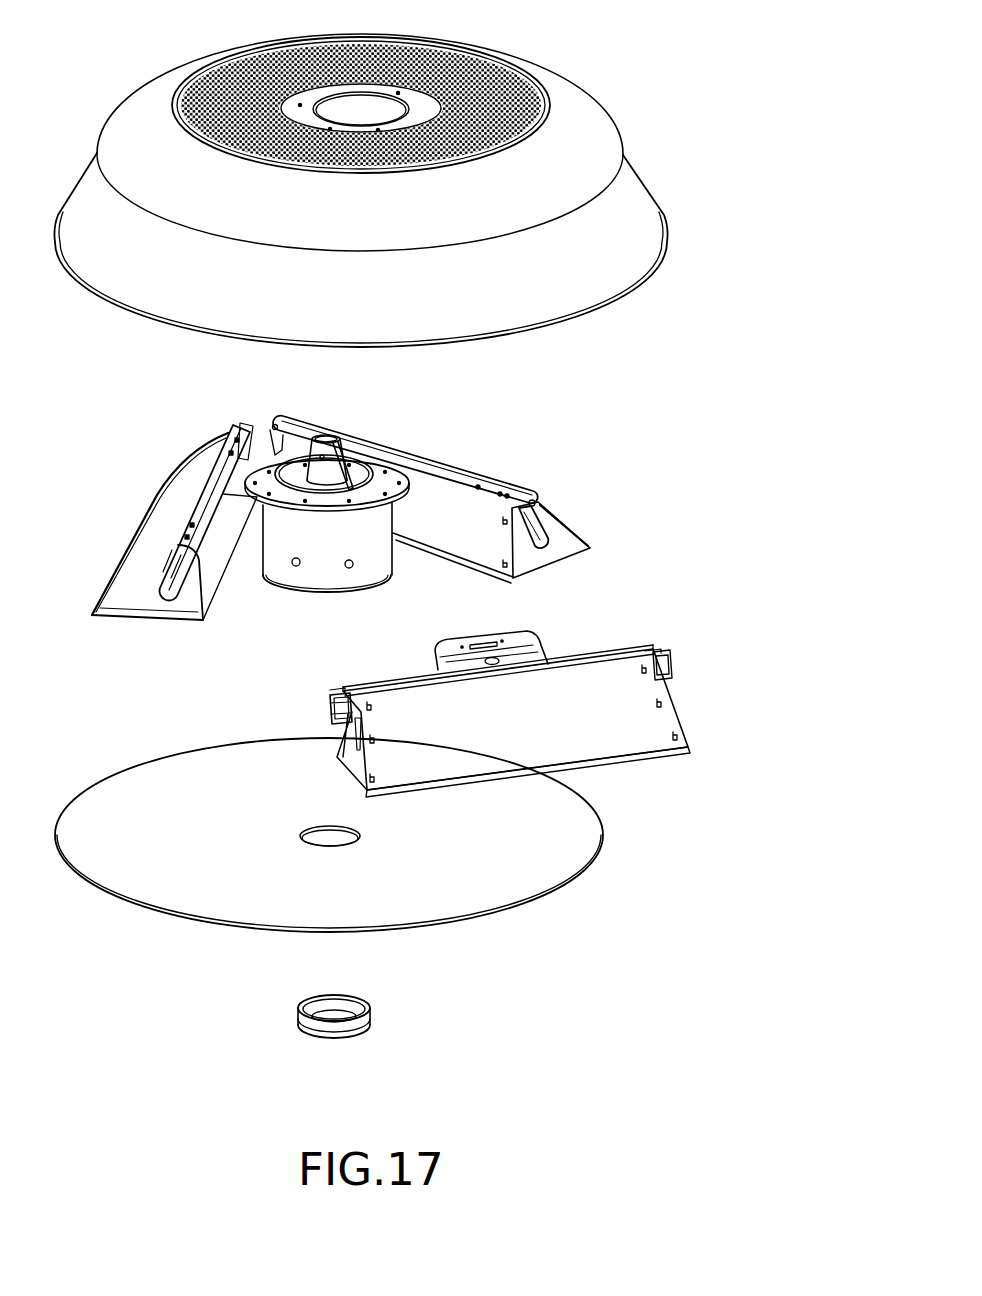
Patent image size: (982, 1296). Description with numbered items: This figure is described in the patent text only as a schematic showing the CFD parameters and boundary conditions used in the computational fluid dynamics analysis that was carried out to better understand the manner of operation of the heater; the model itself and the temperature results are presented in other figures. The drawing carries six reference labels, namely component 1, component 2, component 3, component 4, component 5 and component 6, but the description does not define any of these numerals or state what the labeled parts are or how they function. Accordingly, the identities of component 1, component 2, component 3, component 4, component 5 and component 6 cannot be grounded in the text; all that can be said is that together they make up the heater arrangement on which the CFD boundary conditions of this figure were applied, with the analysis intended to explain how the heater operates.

The dome cover with perforated grille 1 is at (422, 190).
The motor and fan mounting assembly 2 is at (362, 533).
The hinge bracket 3 is at (540, 691).
The mounting panel 4 is at (581, 714).
The circular base plate 5 is at (425, 835).
The mounting ring 6 is at (441, 1001).